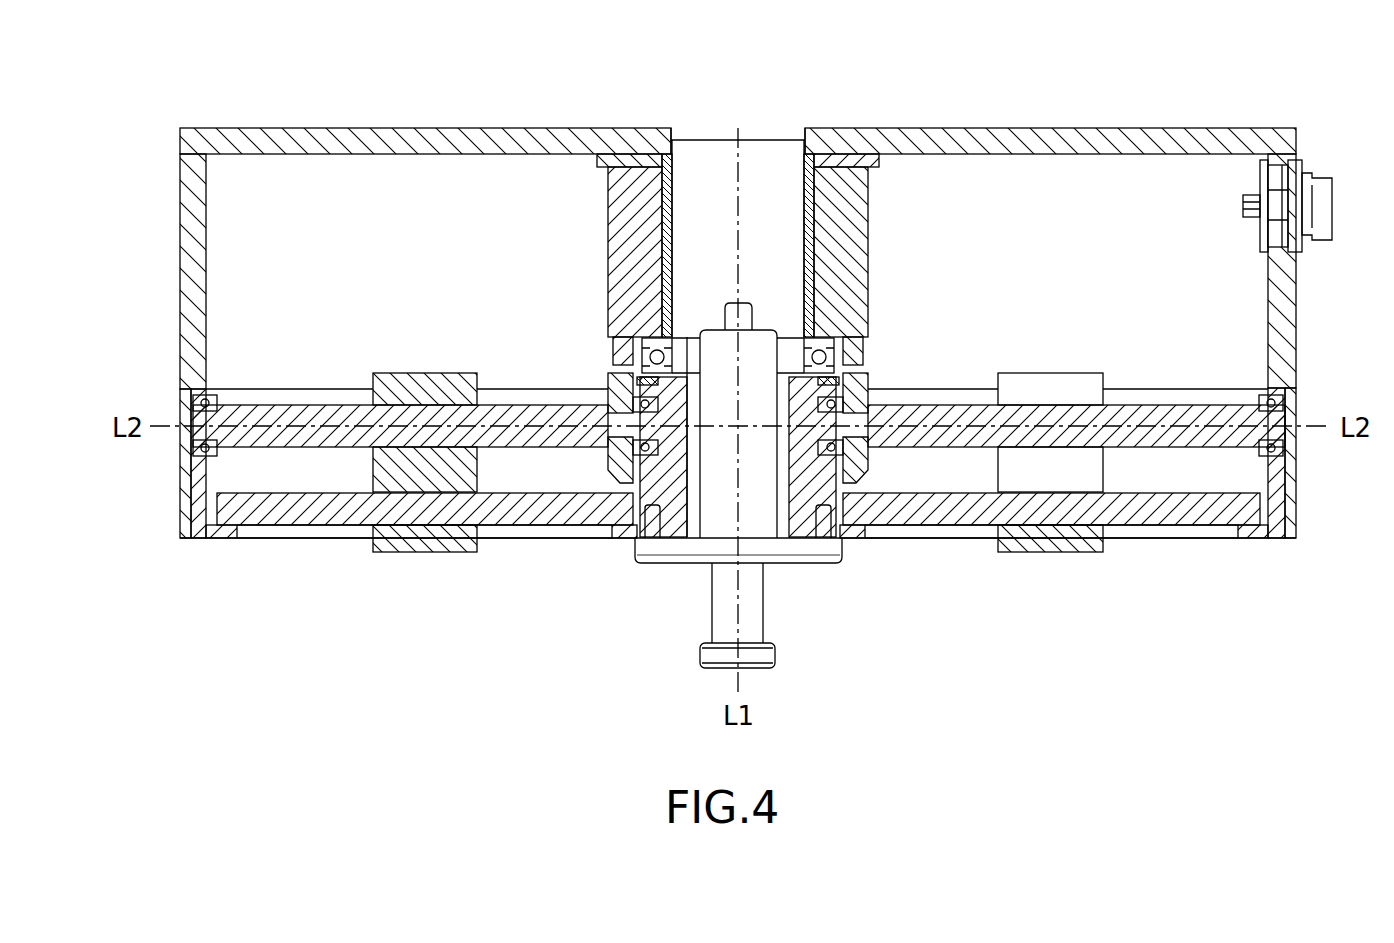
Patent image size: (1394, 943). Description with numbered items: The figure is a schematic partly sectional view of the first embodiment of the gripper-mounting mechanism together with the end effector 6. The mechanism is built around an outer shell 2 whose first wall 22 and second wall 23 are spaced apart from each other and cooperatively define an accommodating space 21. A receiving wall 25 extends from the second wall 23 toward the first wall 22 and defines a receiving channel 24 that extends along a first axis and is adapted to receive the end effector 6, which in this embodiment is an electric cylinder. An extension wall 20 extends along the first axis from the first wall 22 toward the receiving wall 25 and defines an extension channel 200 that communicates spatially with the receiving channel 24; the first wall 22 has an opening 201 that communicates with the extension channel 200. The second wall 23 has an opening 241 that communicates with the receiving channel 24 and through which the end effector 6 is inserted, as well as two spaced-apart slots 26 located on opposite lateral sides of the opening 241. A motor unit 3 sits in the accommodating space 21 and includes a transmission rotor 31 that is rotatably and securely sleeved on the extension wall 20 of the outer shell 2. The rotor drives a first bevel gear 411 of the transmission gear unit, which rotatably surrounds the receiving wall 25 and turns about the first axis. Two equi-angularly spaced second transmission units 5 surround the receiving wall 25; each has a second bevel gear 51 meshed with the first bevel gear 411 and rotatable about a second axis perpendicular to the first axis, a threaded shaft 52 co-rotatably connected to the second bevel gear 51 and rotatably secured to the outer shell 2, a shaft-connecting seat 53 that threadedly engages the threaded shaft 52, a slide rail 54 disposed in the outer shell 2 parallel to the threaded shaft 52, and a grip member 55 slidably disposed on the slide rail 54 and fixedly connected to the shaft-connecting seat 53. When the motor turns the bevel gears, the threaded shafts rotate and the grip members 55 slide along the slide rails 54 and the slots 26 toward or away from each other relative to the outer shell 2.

The outer shell 2 is at (756, 327).
The accommodating space 21 is at (428, 205).
The first wall 22 is at (973, 140).
The second wall 23 is at (1247, 533).
The slots 26 is at (498, 532).
The extension wall 20 is at (738, 188).
The opening 201 is at (722, 135).
The extension channel 200 is at (780, 185).
The motor unit 3 is at (881, 203).
The transmission rotor 31 is at (852, 348).
The first bevel gear 411 is at (848, 355).
The second bevel gear 51 is at (860, 383).
The second transmission unit 5 is at (791, 463).
The threaded shaft 52 is at (1183, 408).
The shaft-connecting seat 53 is at (1098, 378).
The slide rail 54 is at (1188, 520).
The grip member 55 is at (1055, 542).
The receiving channel 24 is at (783, 513).
The opening 241 is at (693, 528).
The receiving wall 25 is at (673, 520).
The end effector 6 is at (739, 500).